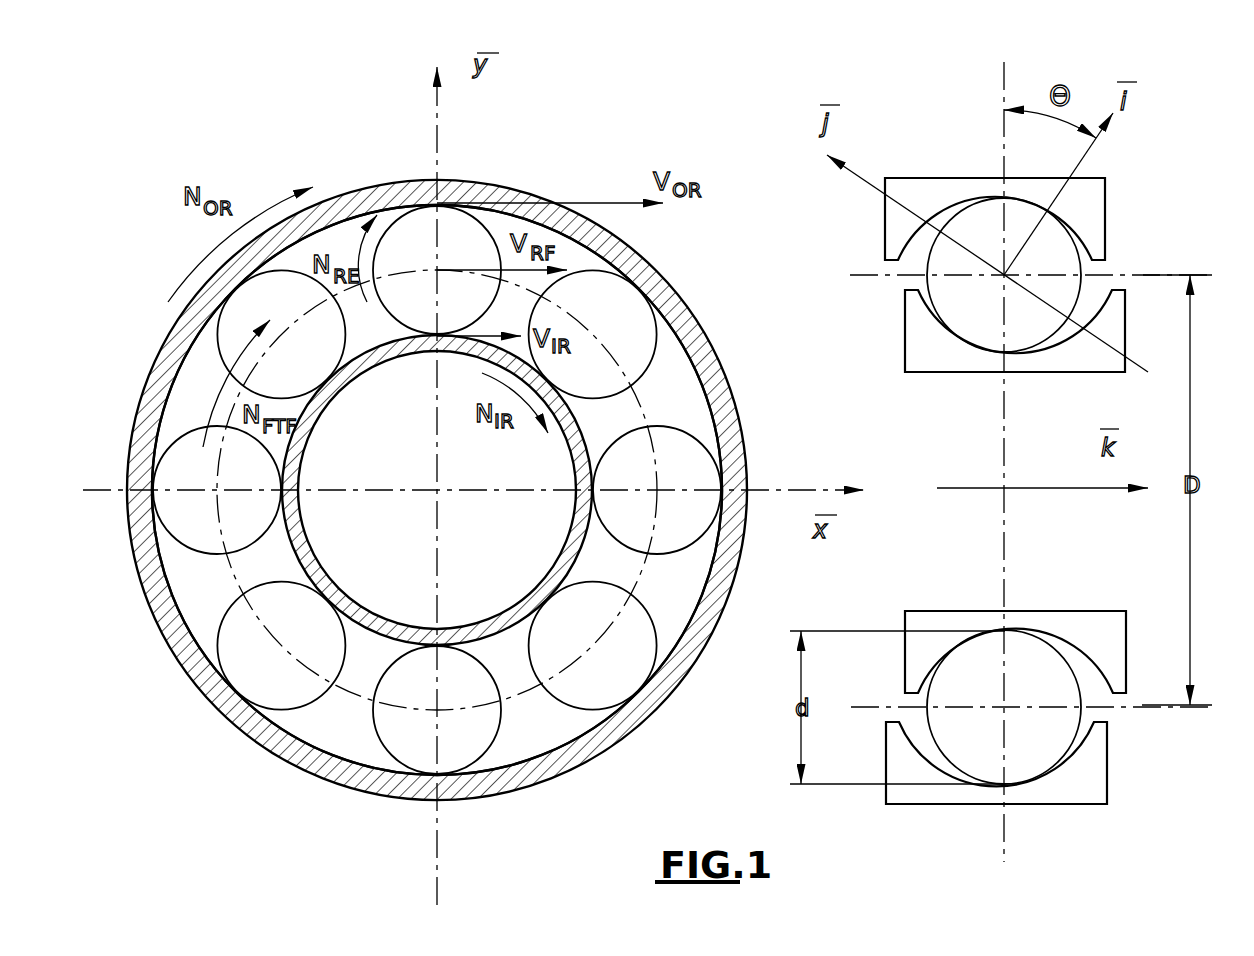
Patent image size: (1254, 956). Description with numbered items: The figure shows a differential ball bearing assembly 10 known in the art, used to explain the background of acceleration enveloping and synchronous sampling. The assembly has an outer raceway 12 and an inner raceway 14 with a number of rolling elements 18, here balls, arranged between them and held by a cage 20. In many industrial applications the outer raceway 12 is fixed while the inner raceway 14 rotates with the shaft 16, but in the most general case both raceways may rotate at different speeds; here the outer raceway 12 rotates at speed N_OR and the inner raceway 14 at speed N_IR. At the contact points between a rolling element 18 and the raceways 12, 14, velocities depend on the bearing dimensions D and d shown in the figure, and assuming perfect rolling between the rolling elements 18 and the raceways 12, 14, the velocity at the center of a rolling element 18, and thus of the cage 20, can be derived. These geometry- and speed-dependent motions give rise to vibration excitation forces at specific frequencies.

The differential ball bearing assembly 10 is at (714, 40).
The outer raceway 12 is at (386, 181).
The inner raceway 14 is at (592, 422).
The shaft 16 is at (328, 525).
The rolling element 18 is at (185, 453).
The cage 20 is at (328, 741).